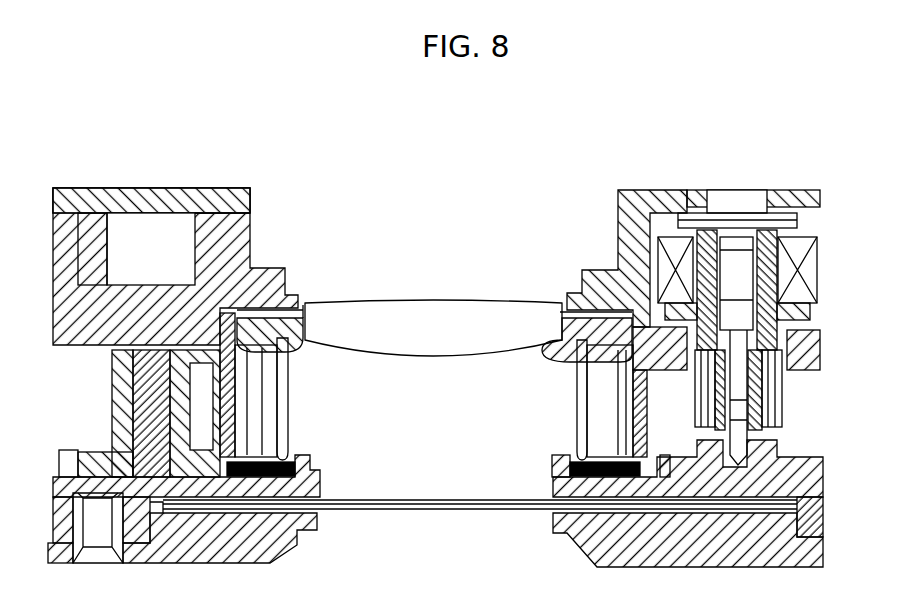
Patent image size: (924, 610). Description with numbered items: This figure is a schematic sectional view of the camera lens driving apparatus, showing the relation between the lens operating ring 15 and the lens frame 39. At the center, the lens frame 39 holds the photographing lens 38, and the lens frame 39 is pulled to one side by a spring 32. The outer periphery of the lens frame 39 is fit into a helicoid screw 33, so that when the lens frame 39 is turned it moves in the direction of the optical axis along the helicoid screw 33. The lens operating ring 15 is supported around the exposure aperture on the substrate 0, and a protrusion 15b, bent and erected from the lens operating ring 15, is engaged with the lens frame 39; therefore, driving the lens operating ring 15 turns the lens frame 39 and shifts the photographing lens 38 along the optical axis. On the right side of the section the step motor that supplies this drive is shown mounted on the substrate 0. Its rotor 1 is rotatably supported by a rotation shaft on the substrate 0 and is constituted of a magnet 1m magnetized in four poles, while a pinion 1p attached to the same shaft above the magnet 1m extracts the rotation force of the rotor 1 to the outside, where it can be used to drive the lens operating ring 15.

The substrate 0 is at (823, 480).
The rotor 1 is at (740, 186).
The magnet 1m is at (818, 264).
The pinion 1p is at (785, 411).
The lens operating ring 15 is at (580, 460).
The protrusion 15b is at (270, 433).
The spring 32 is at (290, 378).
The helicoid screw 33 is at (243, 403).
The photographing lens 38 is at (434, 302).
The lens frame 39 is at (567, 310).